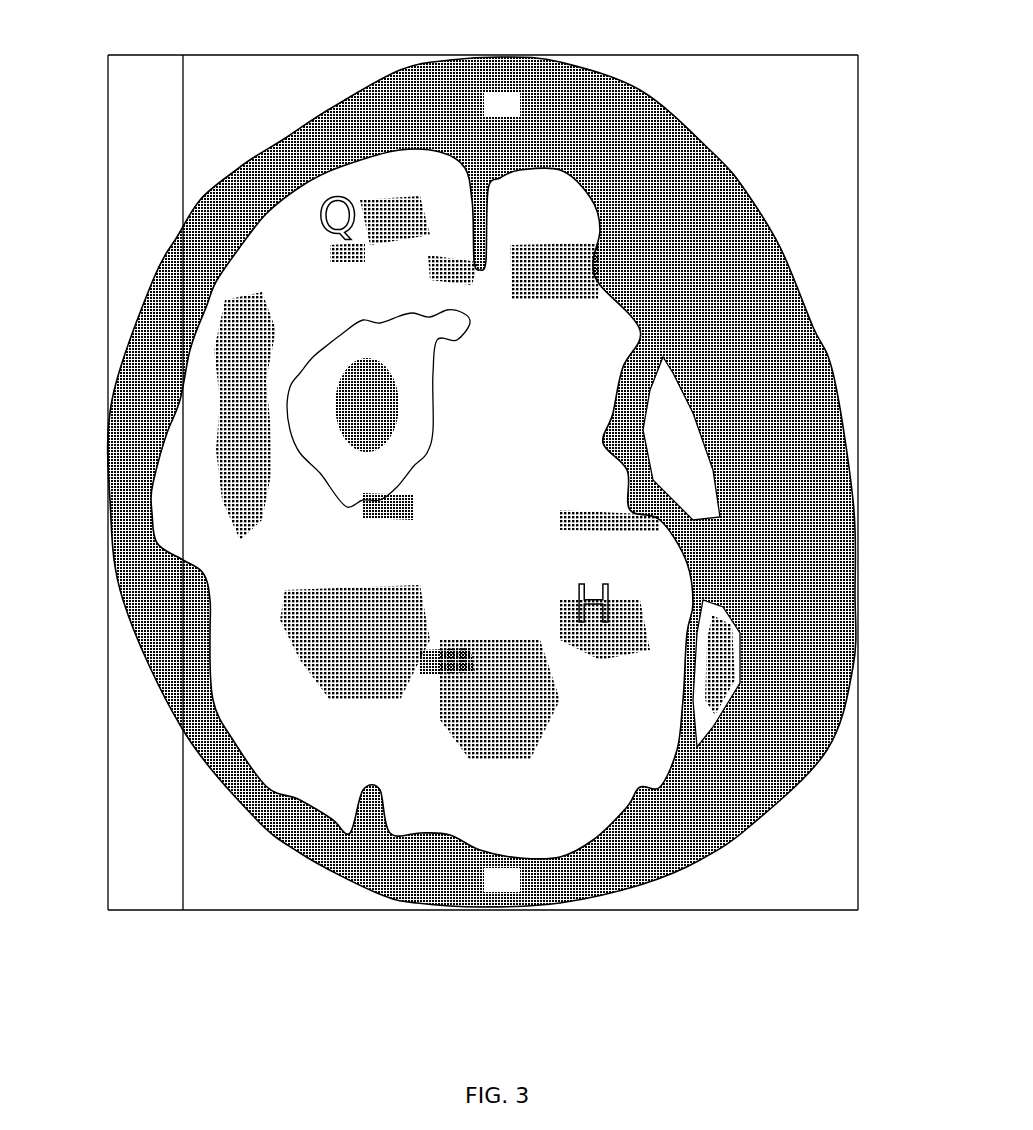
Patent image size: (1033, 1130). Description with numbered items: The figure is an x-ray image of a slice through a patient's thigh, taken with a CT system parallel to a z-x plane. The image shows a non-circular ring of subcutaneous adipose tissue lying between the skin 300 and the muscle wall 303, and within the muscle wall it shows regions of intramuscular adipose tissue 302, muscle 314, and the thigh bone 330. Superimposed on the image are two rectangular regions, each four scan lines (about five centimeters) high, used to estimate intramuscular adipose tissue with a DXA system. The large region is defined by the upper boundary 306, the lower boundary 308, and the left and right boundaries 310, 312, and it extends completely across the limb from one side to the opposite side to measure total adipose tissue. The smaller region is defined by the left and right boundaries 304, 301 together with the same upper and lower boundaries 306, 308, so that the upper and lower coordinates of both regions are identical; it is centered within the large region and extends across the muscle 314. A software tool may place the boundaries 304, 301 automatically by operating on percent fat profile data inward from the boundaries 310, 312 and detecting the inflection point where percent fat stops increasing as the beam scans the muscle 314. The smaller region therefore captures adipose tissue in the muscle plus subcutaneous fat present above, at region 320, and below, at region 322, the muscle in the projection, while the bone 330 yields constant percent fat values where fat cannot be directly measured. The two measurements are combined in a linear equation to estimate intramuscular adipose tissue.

The skin 300 is at (255, 818).
The right boundary of the smaller region 301 is at (738, 265).
The intramuscular adipose tissue 302 is at (713, 557).
The muscle wall 303 is at (303, 800).
The left boundary of the smaller region 304 is at (180, 480).
The upper boundary 306 is at (340, 55).
The lower boundary 308 is at (665, 912).
The left boundary of the large region 310 is at (108, 165).
The right boundary of the large region 312 is at (858, 112).
The muscle 314 is at (200, 517).
The region above the muscle 320 is at (502, 105).
The region below the muscle 322 is at (502, 880).
The thigh bone 330 is at (305, 383).